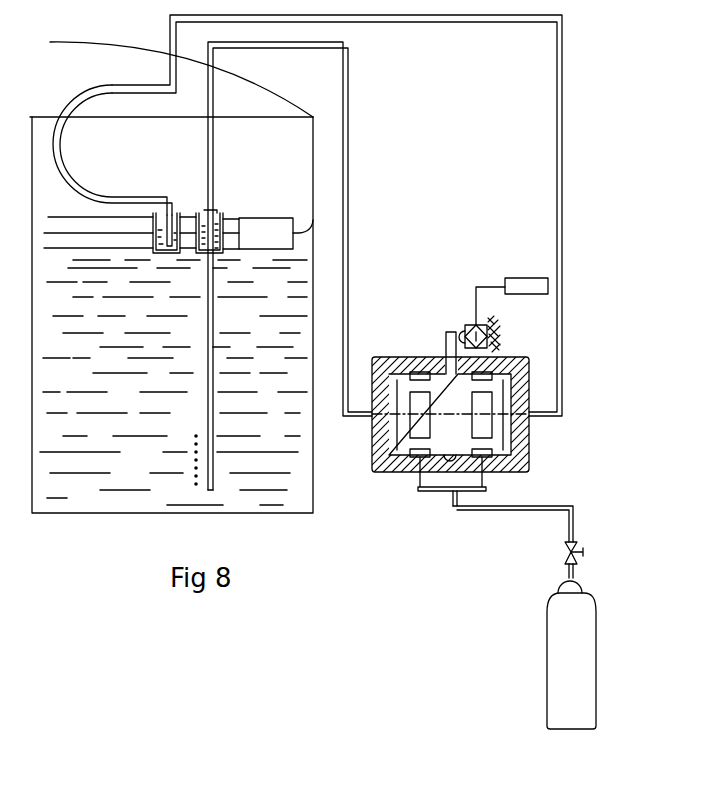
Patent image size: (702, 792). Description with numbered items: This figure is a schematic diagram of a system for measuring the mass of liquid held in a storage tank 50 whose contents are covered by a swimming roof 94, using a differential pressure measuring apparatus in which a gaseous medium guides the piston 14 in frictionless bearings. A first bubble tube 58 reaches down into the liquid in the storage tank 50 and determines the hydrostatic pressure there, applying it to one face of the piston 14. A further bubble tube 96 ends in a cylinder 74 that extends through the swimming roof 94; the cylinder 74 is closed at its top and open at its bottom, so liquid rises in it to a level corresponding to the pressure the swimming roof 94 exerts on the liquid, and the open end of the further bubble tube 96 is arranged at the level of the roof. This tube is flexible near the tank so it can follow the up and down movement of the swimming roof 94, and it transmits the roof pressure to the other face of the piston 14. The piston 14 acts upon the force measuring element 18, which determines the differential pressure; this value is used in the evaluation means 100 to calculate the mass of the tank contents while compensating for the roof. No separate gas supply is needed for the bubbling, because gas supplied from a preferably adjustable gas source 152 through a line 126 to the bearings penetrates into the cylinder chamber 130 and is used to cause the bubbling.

The piston 14 is at (402, 467).
The force measuring element 18 is at (466, 327).
The storage tank 50 is at (312, 505).
The first bubble tube 58 is at (352, 108).
The cylinder 74 is at (175, 212).
The swimming roof 94 is at (268, 236).
The further bubble tube 96 is at (480, 25).
The evaluation means 100 is at (523, 287).
The line 126 is at (517, 512).
The cylinder chamber 130 is at (394, 380).
The gas source 152 is at (558, 656).